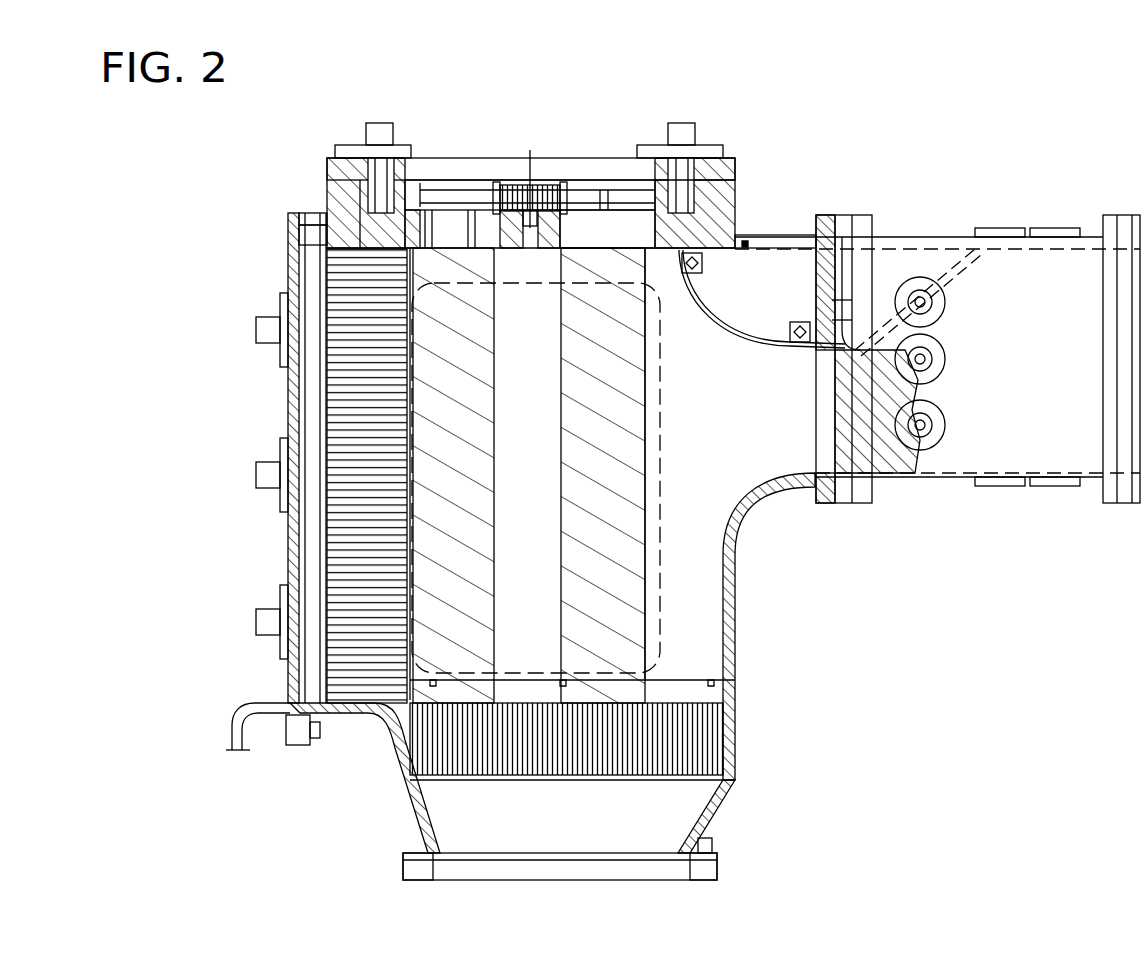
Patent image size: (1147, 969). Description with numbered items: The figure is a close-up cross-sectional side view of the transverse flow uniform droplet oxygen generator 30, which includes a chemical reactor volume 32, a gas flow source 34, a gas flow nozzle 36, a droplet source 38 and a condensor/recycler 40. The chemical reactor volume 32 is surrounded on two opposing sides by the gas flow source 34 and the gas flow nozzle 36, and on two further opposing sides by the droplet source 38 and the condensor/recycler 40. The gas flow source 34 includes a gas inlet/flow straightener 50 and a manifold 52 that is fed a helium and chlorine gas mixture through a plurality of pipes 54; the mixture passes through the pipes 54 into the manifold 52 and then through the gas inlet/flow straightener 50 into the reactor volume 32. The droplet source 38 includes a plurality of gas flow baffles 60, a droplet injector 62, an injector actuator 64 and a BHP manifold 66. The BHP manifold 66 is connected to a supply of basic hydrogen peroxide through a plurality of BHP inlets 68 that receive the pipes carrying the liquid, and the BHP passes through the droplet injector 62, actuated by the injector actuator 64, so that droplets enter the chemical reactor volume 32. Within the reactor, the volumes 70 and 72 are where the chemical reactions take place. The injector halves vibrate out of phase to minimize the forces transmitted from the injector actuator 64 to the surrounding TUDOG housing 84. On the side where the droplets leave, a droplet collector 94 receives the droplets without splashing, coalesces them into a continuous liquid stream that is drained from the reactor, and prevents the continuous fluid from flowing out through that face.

The transverse flow uniform droplet oxygen generator 30 is at (660, 88).
The chemical reactor volume 32 is at (655, 342).
The gas flow source 34 is at (303, 184).
The gas flow nozzle 36 is at (775, 490).
The droplet source 38 is at (745, 203).
The condensor/recycler 40 is at (385, 760).
The gas inlet/flow straightener 50 is at (345, 393).
The manifold 52 is at (312, 540).
The pipes 54 is at (258, 333).
The gas flow baffles 60 is at (432, 212).
The droplet injector 62 is at (547, 172).
The injector actuator 64 is at (520, 190).
The BHP manifold 66 is at (614, 198).
The BHP inlets 68 is at (368, 132).
The reaction volume 70 is at (485, 540).
The reaction volume 72 is at (568, 432).
The TUDOG housing 84 is at (735, 226).
The droplet collector 94 is at (720, 735).